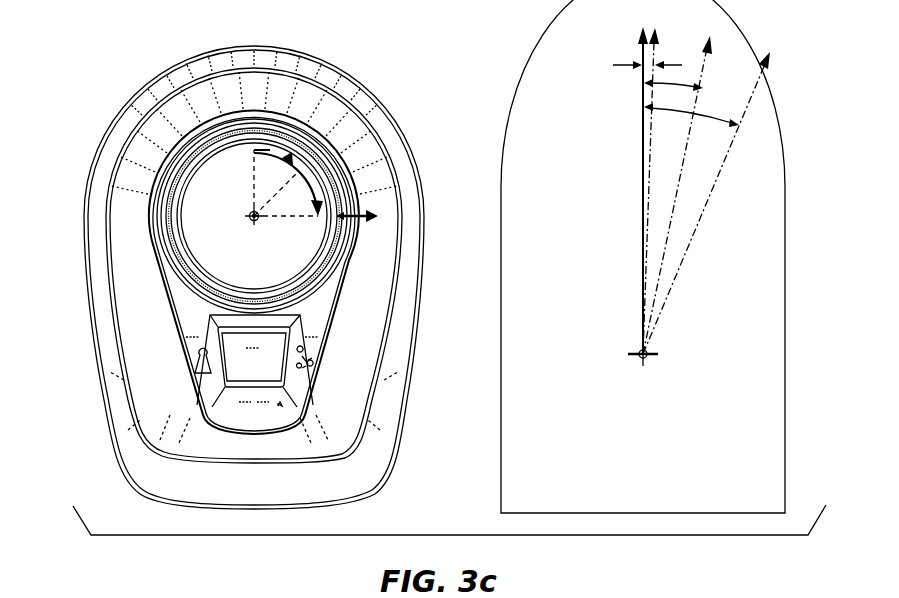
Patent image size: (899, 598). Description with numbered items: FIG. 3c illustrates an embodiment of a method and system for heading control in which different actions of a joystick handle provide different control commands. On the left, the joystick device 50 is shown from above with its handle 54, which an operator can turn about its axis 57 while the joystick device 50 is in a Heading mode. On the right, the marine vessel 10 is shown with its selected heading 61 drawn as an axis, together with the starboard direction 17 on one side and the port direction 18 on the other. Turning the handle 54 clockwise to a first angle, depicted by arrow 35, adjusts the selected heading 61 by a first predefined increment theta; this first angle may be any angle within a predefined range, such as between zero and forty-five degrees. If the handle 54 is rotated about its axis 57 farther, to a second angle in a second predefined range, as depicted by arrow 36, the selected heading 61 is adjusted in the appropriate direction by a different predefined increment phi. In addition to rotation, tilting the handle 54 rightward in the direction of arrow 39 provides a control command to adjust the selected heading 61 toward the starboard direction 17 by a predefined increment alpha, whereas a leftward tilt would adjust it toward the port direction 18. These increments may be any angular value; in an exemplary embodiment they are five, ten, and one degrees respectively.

The joystick device 50 is at (84, 77).
The handle 54 is at (210, 150).
The arrow 35 is at (273, 150).
The arrow 36 is at (315, 183).
The arrow 39 is at (370, 205).
The axis 57 is at (248, 214).
The marine vessel 10 is at (778, 123).
The port direction 18 is at (500, 247).
The starboard direction 17 is at (785, 250).
The selected heading 61 is at (642, 152).